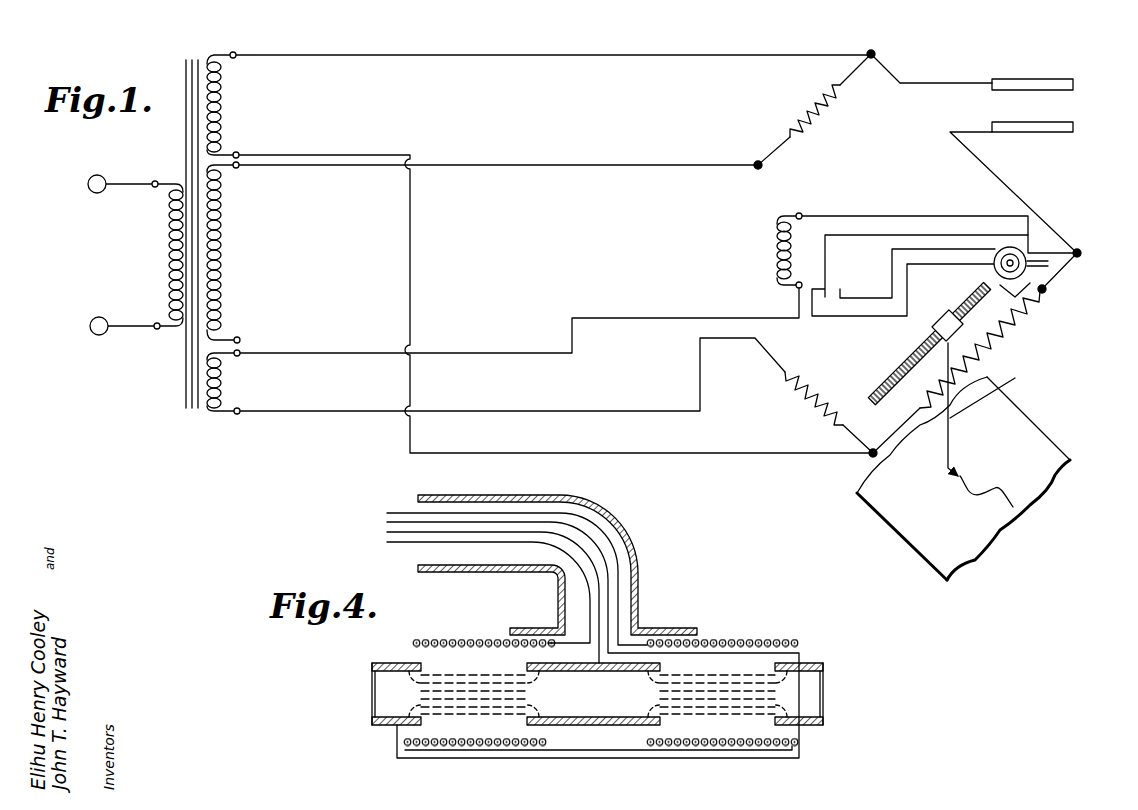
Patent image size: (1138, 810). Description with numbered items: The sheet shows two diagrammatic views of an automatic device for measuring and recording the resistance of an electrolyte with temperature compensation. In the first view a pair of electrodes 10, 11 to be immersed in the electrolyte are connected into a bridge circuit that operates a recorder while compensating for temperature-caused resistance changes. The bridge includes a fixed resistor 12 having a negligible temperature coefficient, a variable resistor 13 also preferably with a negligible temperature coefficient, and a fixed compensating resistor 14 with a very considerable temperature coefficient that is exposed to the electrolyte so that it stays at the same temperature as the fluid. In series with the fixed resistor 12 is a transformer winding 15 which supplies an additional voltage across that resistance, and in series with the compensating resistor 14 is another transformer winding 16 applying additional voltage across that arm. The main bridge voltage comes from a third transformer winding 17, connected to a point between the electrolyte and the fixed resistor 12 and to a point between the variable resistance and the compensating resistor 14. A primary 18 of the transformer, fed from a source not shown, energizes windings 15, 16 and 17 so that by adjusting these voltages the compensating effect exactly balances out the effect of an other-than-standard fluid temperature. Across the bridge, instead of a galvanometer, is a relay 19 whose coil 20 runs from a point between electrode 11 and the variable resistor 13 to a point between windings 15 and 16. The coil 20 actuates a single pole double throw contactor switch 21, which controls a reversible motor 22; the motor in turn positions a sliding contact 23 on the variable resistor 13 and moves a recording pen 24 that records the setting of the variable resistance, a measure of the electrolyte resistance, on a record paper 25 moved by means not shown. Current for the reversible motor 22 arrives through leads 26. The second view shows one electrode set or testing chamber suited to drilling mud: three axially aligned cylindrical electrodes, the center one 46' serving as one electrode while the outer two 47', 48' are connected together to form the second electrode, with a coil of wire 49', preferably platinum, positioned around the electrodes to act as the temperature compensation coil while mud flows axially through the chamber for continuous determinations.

In FIG. 1, the electrode 10 is at (1076, 85).
In FIG. 1, the electrode 11 is at (1076, 128).
In FIG. 1, the fixed resistor 12 is at (818, 110).
In FIG. 1, the variable resistor 13 is at (990, 345).
In FIG. 1, the fixed compensating resistor 14 is at (812, 398).
In FIG. 1, the transformer winding 15 is at (228, 268).
In FIG. 1, the transformer winding 16 is at (228, 388).
In FIG. 1, the third transformer winding 17 is at (228, 118).
In FIG. 1, the primary 18 is at (168, 252).
In FIG. 1, the relay 19 is at (770, 238).
In FIG. 1, the coil 20 is at (777, 270).
In FIG. 1, the single pole double throw contactor switch 21 is at (828, 272).
In FIG. 1, the reversible motor 22 is at (1024, 250).
In FIG. 1, the sliding contact 23 is at (928, 330).
In FIG. 1, the recording pen 24 is at (996, 393).
In FIG. 1, the record paper 25 is at (1040, 440).
In FIG. 1, the leads 26 is at (1048, 265).
In FIG. 4, the center cylindrical electrode 46' is at (593, 725).
In FIG. 4, the outer cylindrical electrode 47' is at (383, 718).
In FIG. 4, the outer cylindrical electrode 48' is at (816, 708).
In FIG. 4, the coil of wire 49' is at (601, 672).